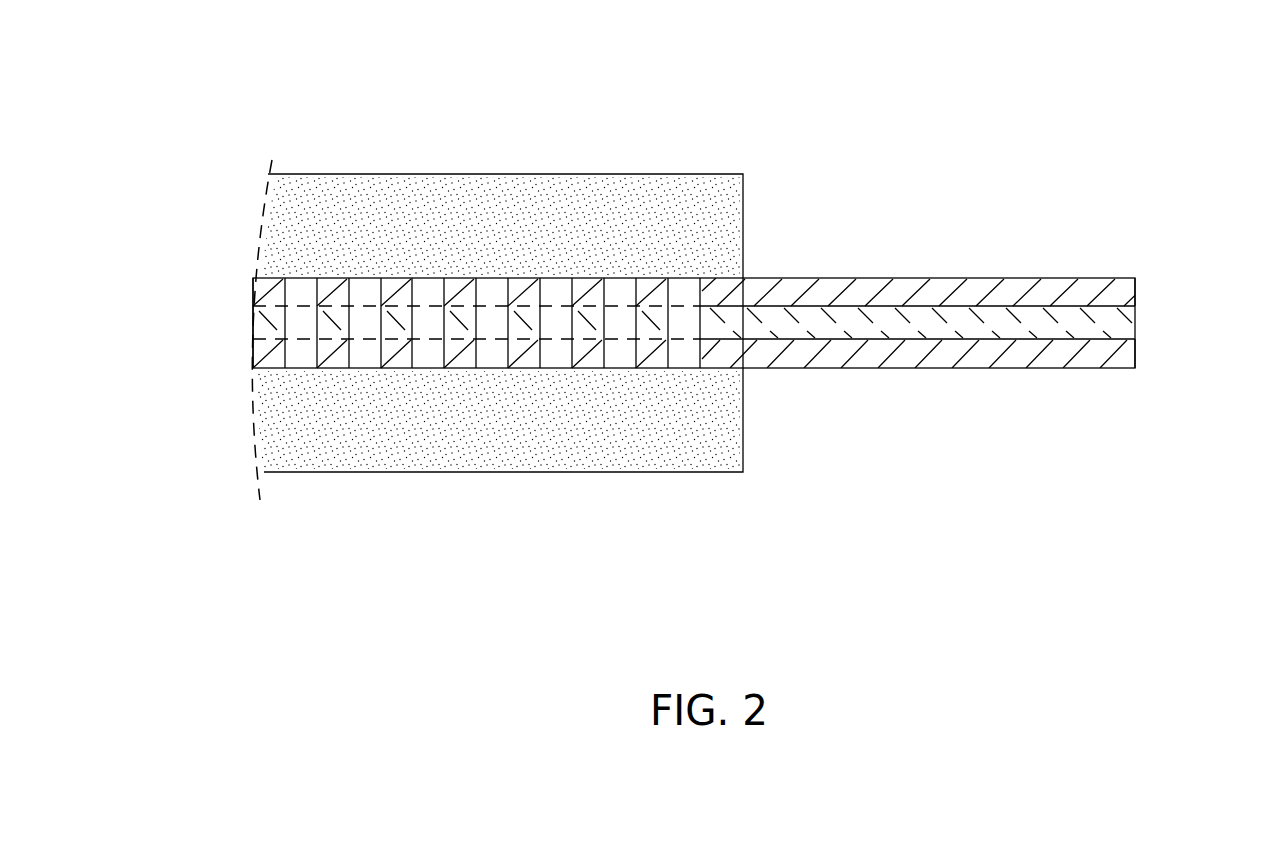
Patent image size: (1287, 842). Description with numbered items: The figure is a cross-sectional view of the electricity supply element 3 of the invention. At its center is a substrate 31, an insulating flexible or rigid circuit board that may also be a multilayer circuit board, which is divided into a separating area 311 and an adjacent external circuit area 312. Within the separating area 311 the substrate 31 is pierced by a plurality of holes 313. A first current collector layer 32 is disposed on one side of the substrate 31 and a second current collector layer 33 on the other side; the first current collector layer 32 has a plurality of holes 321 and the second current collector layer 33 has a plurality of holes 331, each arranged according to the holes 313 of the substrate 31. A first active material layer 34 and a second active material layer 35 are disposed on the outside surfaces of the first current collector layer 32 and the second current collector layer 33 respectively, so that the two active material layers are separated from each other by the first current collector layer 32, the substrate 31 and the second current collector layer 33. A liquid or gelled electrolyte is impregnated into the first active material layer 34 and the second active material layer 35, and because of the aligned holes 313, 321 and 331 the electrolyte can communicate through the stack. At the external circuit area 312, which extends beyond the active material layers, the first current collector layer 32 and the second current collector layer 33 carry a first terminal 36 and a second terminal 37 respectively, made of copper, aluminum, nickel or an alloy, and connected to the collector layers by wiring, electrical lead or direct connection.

The electricity supply element 3 is at (303, 72).
The substrate 31 is at (253, 325).
The separating area 311 is at (675, 397).
The external circuit area 312 is at (1118, 398).
The holes 313 is at (373, 323).
The first current collector layer 32 is at (255, 287).
The holes 321 is at (298, 292).
The second current collector layer 33 is at (260, 355).
The holes 331 is at (428, 355).
The first active material layer 34 is at (255, 218).
The second active material layer 35 is at (272, 427).
The first terminal 36 is at (1135, 290).
The second terminal 37 is at (1135, 350).